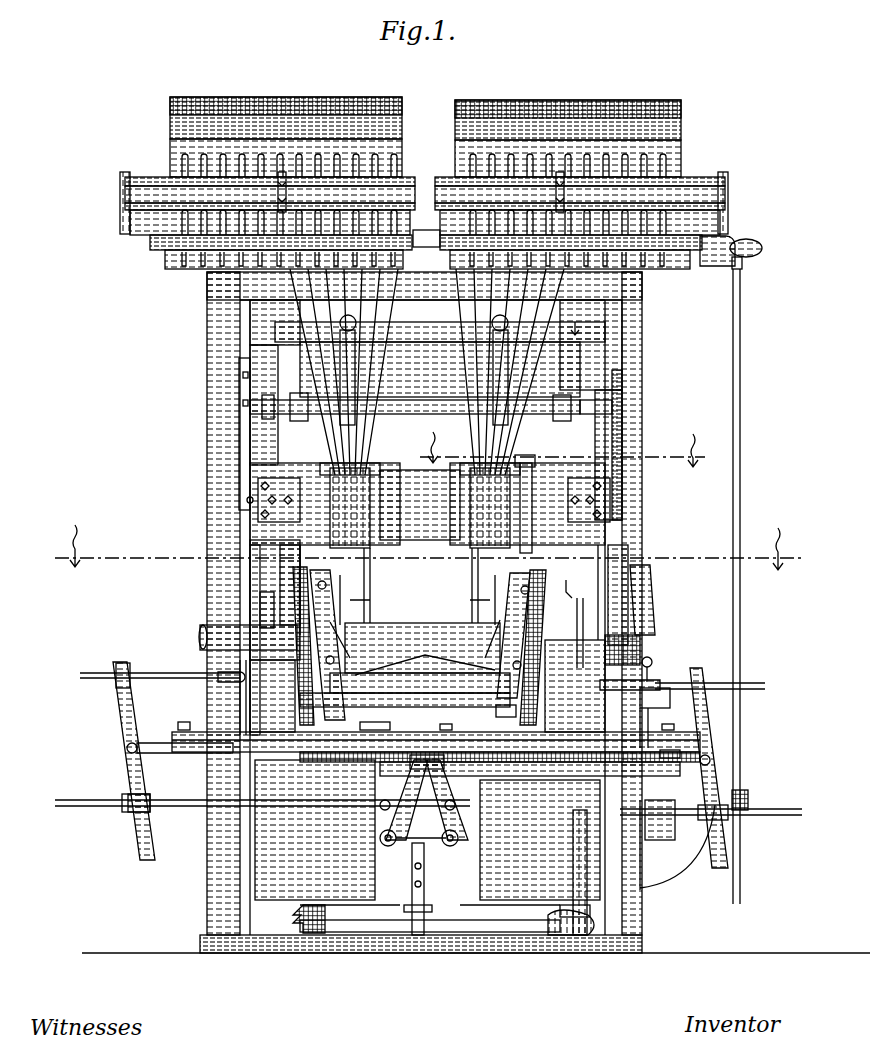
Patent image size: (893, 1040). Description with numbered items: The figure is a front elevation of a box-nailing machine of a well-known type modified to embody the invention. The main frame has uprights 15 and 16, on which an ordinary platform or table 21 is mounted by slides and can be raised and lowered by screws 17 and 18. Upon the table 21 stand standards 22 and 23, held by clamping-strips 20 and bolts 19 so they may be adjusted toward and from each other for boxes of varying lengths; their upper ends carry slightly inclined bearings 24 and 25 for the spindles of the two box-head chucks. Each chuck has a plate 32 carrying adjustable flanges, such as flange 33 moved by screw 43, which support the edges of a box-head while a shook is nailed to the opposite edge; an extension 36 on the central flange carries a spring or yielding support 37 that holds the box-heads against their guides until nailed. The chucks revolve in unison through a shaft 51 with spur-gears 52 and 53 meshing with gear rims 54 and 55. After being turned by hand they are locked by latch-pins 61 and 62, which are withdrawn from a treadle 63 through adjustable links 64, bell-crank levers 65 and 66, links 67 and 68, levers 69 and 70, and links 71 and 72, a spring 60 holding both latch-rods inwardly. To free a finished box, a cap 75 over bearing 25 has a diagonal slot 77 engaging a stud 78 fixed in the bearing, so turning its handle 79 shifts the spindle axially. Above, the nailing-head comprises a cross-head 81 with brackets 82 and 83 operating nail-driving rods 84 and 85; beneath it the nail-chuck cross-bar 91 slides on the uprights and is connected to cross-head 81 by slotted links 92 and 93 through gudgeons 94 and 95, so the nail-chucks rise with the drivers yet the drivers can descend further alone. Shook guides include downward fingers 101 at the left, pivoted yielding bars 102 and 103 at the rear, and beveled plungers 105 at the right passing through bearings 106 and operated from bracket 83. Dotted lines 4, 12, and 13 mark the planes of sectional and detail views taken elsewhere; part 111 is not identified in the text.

The dotted line 4 4 is at (424, 547).
The dotted line 12 12 is at (568, 454).
The dotted line 13 13 is at (563, 450).
The upright 15 is at (210, 858).
The upright 16 is at (645, 905).
The screw 17 is at (235, 890).
The screw 18 is at (630, 884).
The bolt 19 is at (662, 728).
The clamping-strip 20 is at (519, 735).
The platform or table 21 is at (195, 735).
The standard 22 is at (272, 696).
The standard 23 is at (575, 686).
The bearing 24 is at (225, 628).
The bearing 25 is at (578, 615).
The plate 32 is at (423, 595).
The flange 33 is at (420, 597).
The extension 36 is at (425, 658).
The spring or yielding support 37 is at (415, 630).
The screw 43 is at (516, 648).
The shaft 51 is at (420, 692).
The spur-gear 52 is at (405, 702).
The spur-gear 53 is at (520, 758).
The spur-gear rim 54 is at (294, 582).
The spur-gear rim 55 is at (542, 572).
The spring 60 is at (435, 762).
The latch-pin 61 is at (237, 677).
The latch-pin 62 is at (646, 710).
The treadle 63 is at (445, 932).
The adjustable link 64 is at (423, 878).
The bell-crank lever 65 is at (392, 852).
The bell-crank lever 66 is at (458, 844).
The link 67 is at (83, 807).
The link 68 is at (770, 814).
The lever 69 is at (116, 723).
The lever 70 is at (710, 727).
The link 71 is at (160, 680).
The link 72 is at (712, 680).
The cap 75 is at (638, 645).
The diagonal slot 77 is at (640, 635).
The stud 78 is at (647, 654).
The handle 79 is at (637, 574).
The cross-head 81 is at (420, 343).
The arm or bracket 82 is at (362, 400).
The arm or bracket 83 is at (485, 400).
The nail-driving rod 84 is at (350, 443).
The nail-driving rod 85 is at (488, 443).
The cross-bar 91 is at (428, 540).
The link 92 is at (238, 455).
The link 93 is at (630, 407).
The gudgeon 94 is at (246, 496).
The gudgeon 95 is at (612, 498).
The finger 101 is at (333, 549).
The bar 102 is at (372, 577).
The bar 103 is at (472, 578).
The plunger 105 is at (537, 457).
The bearing 106 is at (506, 548).
The pin 111 is at (512, 713).